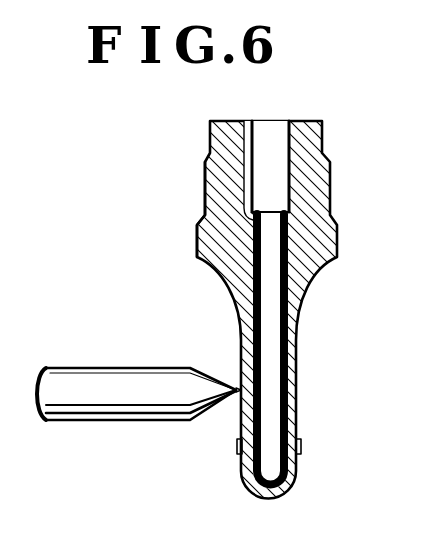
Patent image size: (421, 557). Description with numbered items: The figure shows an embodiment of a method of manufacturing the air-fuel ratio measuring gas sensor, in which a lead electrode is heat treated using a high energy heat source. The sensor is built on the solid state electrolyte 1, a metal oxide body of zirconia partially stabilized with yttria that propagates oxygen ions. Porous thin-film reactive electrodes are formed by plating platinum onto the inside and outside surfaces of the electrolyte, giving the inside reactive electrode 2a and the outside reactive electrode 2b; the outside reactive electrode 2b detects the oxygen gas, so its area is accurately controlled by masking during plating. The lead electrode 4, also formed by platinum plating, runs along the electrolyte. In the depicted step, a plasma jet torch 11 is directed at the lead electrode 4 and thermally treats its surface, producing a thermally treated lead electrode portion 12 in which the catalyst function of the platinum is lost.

The solid state electrolyte 1 is at (310, 188).
The inside reactive electrode 2a is at (303, 297).
The outside reactive electrode 2b is at (301, 447).
The lead electrode 4 is at (197, 247).
The plasma jet torch 11 is at (105, 395).
The thermally treated lead electrode portion 12 is at (241, 414).